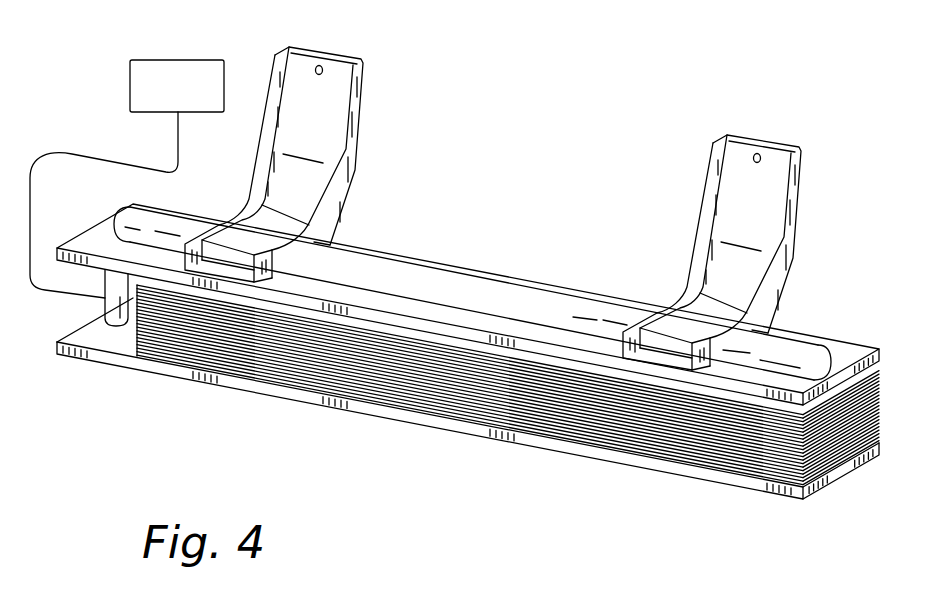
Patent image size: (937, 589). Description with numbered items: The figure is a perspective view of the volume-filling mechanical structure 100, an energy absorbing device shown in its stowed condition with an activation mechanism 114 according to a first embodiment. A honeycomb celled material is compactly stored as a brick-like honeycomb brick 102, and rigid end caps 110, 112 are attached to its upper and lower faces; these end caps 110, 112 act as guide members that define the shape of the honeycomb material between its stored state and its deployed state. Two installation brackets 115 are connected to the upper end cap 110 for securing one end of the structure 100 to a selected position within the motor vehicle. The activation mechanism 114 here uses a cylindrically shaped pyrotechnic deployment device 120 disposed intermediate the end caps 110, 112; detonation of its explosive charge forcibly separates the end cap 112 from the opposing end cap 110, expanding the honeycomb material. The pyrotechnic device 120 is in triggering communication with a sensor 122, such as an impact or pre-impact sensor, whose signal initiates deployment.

The volume-filling mechanical structure 100 is at (677, 97).
The honeycomb brick 102 is at (642, 423).
The end cap 110 is at (838, 358).
The end cap 112 is at (302, 398).
The activation mechanism 114 is at (72, 95).
The installation bracket 115 is at (367, 113).
The pyrotechnic deployment device 120 is at (117, 305).
The sensor 122 is at (180, 60).